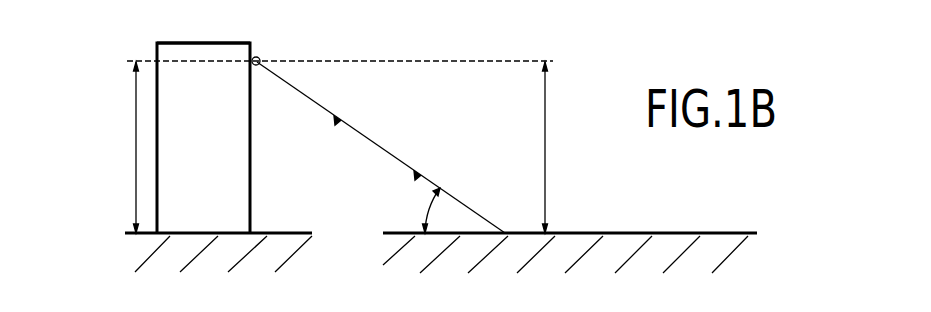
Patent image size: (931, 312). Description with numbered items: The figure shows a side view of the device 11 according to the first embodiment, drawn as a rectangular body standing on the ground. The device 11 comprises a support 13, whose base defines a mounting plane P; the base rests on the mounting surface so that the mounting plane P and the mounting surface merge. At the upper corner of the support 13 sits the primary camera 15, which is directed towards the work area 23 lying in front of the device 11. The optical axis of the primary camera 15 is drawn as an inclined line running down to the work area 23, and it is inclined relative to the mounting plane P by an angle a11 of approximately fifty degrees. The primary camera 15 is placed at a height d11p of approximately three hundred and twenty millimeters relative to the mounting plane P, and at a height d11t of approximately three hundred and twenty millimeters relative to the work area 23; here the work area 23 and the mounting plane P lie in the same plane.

The device 11 is at (212, 157).
The support 13 is at (203, 53).
The primary camera 15 is at (258, 59).
The work area 23 is at (520, 236).
The mounting plane P is at (183, 238).
The angle a11 is at (411, 210).
The height d11p is at (109, 147).
The height d11t is at (575, 147).